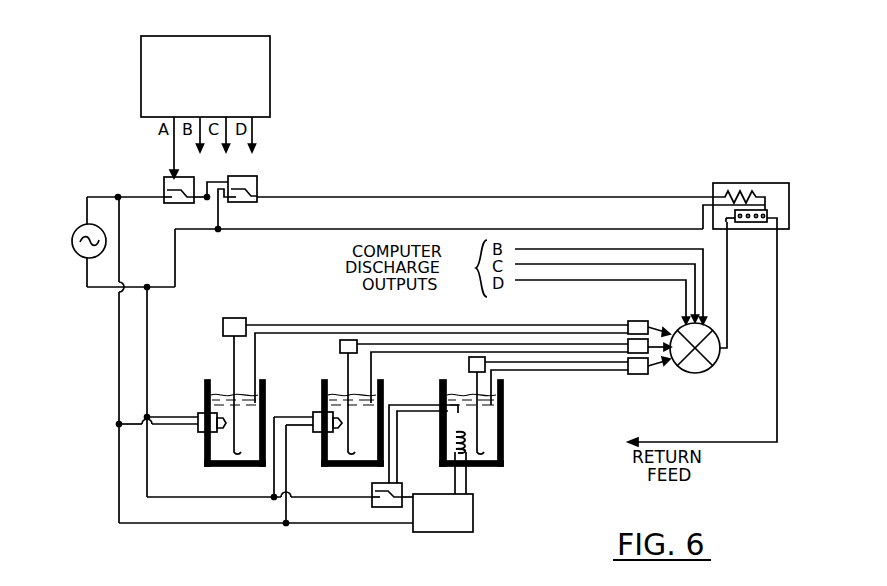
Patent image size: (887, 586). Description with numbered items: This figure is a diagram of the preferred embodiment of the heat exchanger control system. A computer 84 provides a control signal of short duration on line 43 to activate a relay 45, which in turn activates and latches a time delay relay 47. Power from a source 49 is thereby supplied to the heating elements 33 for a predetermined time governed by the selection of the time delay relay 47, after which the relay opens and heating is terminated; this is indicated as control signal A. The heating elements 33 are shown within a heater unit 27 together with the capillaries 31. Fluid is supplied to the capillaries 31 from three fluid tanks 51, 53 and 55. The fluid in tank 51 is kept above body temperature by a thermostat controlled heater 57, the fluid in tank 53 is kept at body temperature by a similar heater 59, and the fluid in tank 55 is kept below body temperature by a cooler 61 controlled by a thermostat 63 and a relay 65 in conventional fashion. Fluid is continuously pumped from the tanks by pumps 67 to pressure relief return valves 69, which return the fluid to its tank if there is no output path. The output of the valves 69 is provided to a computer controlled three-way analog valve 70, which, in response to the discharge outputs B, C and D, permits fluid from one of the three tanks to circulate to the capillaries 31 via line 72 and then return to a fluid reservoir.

The computer 84 is at (255, 82).
The line 43 is at (174, 162).
The relay 45 is at (180, 204).
The time delay relay 47 is at (257, 182).
The source 49 is at (74, 250).
The heater unit 27 is at (783, 193).
The heating elements 33 is at (735, 190).
The capillaries 31 is at (760, 218).
The line 72 is at (727, 318).
The three-way analog valve 70 is at (700, 374).
The pressure relief return valves 69 is at (628, 322).
The pumps 67 is at (236, 318).
The thermostat controlled heater 57 is at (205, 413).
The heater 59 is at (318, 412).
The fluid tank 51 is at (211, 463).
The fluid tank 53 is at (340, 462).
The fluid tank 55 is at (503, 433).
The thermostat 63 is at (457, 410).
The relay 65 is at (386, 508).
The cooler 61 is at (475, 516).